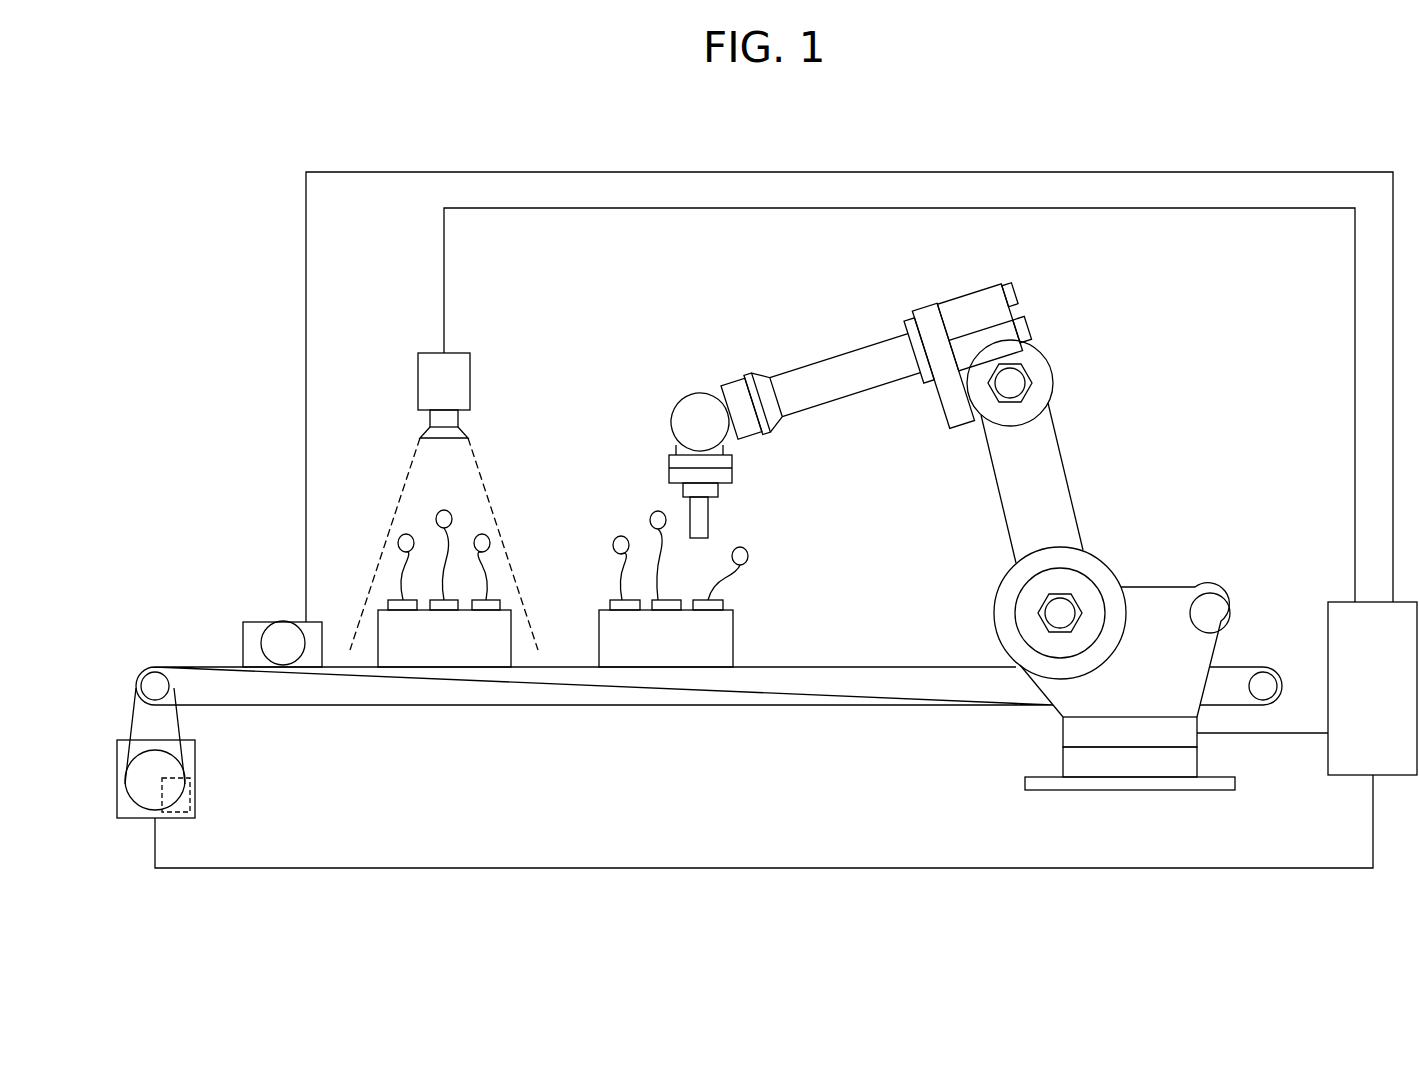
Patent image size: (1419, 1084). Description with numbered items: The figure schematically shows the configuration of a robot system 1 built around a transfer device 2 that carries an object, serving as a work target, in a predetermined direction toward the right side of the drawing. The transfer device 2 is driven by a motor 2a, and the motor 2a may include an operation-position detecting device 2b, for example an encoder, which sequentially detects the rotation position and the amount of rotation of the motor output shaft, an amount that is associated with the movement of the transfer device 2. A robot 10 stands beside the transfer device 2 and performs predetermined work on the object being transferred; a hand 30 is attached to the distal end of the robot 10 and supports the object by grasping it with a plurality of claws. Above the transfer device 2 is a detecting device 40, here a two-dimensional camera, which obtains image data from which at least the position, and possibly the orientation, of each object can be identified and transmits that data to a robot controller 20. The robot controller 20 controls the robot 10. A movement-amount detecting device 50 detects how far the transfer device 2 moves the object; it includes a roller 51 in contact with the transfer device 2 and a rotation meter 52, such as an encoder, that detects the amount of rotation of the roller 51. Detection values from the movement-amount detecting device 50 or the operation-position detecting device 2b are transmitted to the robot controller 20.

The robot system 1 is at (243, 124).
The transfer device 2 is at (200, 664).
The motor 2a is at (195, 757).
The operation-position detecting device 2b is at (197, 798).
The robot 10 is at (1115, 455).
The robot controller 20 is at (1342, 601).
The hand 30 is at (708, 513).
The detecting device 40 is at (470, 380).
The movement-amount detecting device 50 is at (300, 640).
The roller 51 is at (303, 655).
The rotation meter 52 is at (255, 620).